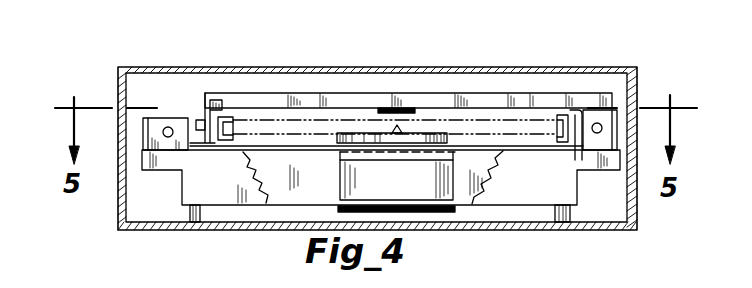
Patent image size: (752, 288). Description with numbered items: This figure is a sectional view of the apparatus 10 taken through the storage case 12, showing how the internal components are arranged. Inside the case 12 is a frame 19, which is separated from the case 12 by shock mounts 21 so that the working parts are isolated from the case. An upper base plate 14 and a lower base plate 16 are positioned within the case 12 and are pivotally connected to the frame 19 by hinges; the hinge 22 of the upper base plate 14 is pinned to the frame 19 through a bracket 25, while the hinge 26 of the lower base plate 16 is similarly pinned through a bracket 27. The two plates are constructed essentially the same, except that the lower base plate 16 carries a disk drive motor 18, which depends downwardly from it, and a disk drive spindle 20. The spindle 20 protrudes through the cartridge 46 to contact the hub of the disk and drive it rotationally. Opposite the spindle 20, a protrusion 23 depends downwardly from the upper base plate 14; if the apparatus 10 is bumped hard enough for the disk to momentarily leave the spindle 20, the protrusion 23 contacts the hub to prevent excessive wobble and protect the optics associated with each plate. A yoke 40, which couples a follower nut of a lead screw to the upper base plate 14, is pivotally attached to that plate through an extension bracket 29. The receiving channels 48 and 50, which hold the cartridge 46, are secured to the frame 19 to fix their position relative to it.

The apparatus 10 is at (107, 50).
The storage case 12 is at (187, 66).
The upper base plate 14 is at (363, 98).
The lower base plate 16 is at (313, 158).
The disk drive motor 18 is at (452, 190).
The frame 19 is at (573, 187).
The disk drive spindle 20 is at (400, 134).
The shock mounts 21 is at (187, 218).
The hinge 22 is at (610, 92).
The protrusion 23 is at (390, 110).
The bracket 25 is at (600, 140).
The hinge 26 is at (140, 133).
The bracket 27 is at (167, 143).
The extension bracket 29 is at (205, 93).
The yoke 40 is at (202, 142).
The cartridge 46 is at (283, 120).
The receiving channel 48 is at (230, 140).
The receiving channel 50 is at (570, 147).